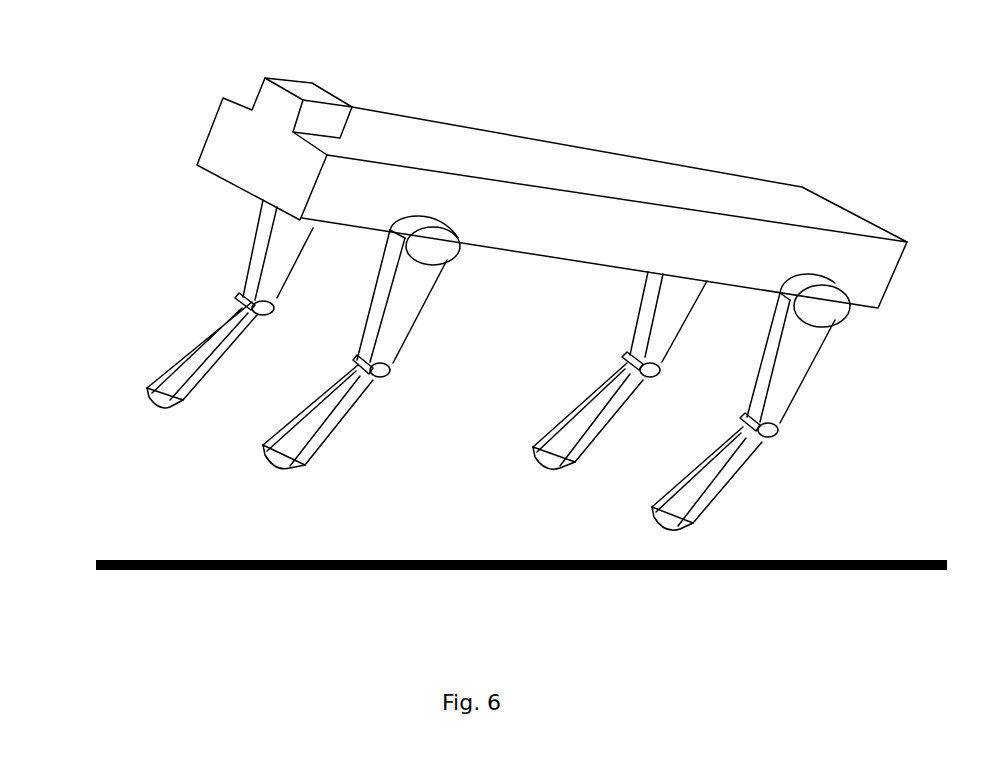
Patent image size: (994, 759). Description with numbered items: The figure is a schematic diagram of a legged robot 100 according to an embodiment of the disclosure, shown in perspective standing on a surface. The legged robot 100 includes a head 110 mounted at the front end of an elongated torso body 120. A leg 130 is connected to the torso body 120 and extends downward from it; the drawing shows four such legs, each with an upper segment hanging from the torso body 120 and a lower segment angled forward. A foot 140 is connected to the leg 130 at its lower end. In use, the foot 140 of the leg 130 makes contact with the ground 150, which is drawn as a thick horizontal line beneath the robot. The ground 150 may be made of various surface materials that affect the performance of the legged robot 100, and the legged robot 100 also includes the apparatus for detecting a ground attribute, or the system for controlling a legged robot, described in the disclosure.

The legged robot 100 is at (757, 127).
The head 110 is at (263, 85).
The torso body 120 is at (548, 197).
The leg 130 is at (192, 347).
The foot 140 is at (281, 470).
The ground 150 is at (297, 570).